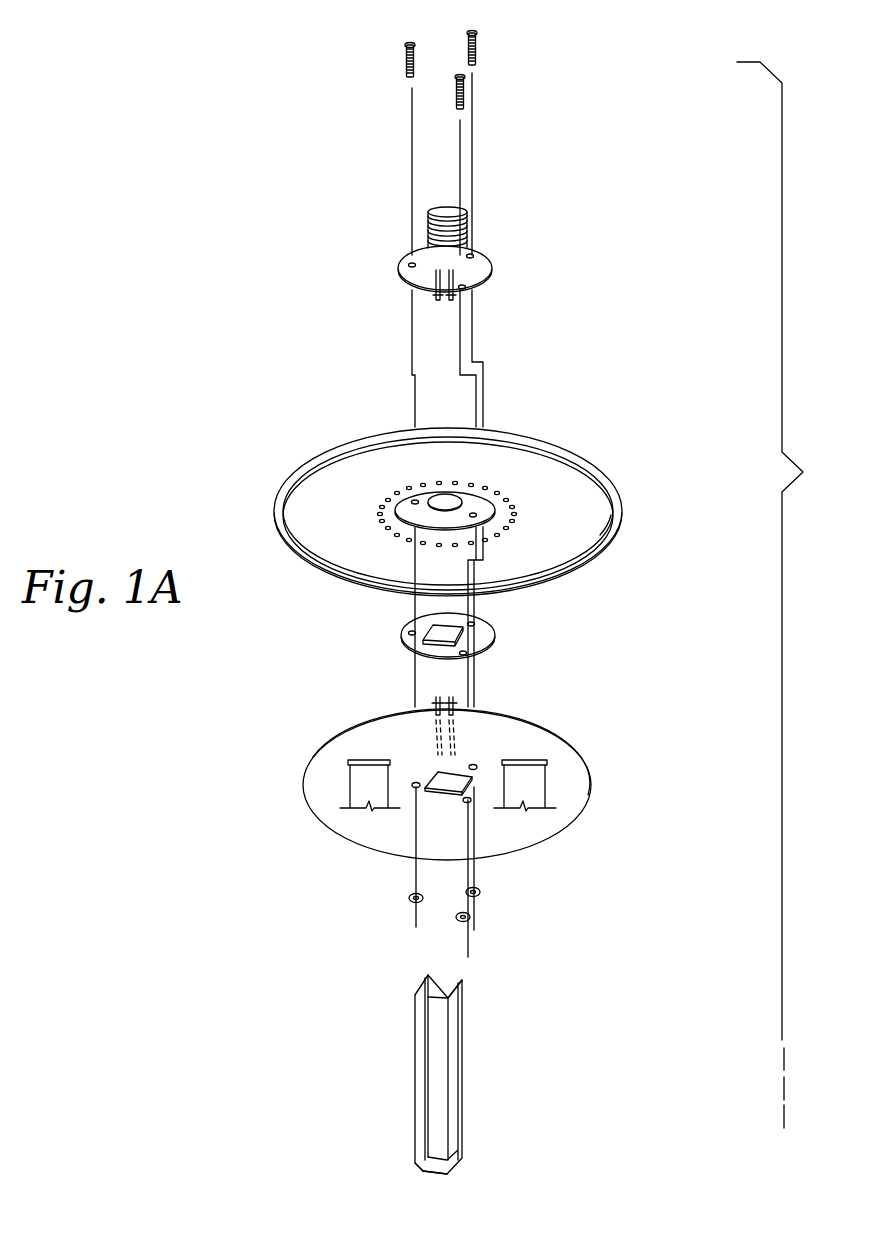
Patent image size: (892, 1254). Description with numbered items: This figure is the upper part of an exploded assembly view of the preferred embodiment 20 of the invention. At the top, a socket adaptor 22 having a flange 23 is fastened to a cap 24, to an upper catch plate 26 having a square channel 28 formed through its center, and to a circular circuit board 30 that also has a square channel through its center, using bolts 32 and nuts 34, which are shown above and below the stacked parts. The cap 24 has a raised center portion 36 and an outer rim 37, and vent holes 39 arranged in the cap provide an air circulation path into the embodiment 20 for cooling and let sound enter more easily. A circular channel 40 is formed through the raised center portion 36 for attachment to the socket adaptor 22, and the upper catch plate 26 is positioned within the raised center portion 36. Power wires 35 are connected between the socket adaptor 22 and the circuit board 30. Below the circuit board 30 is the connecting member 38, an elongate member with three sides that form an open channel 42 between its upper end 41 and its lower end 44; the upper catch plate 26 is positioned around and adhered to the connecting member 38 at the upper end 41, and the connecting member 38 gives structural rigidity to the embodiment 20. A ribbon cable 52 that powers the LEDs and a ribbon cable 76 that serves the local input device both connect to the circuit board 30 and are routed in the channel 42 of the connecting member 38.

The preferred embodiment 20 is at (785, 595).
The socket adaptor 22 is at (443, 210).
The flange 23 is at (488, 264).
The cap 24 is at (613, 500).
The upper catch plate 26 is at (498, 636).
The square channel 28 is at (406, 631).
The circular circuit board 30 is at (590, 778).
The bolts 32 is at (406, 40).
The nuts 34 is at (410, 896).
The power wires 35 is at (444, 302).
The raised center portion 36 is at (409, 522).
The outer rim 37 is at (604, 528).
The connecting member 38 is at (420, 1068).
The vent holes 39 is at (390, 497).
The circular channel 40 is at (463, 499).
The upper end 41 is at (410, 980).
The open channel 42 is at (428, 1172).
The lower end 44 is at (408, 1162).
The ribbon cable 52 is at (348, 805).
The ribbon cable 76 is at (546, 805).